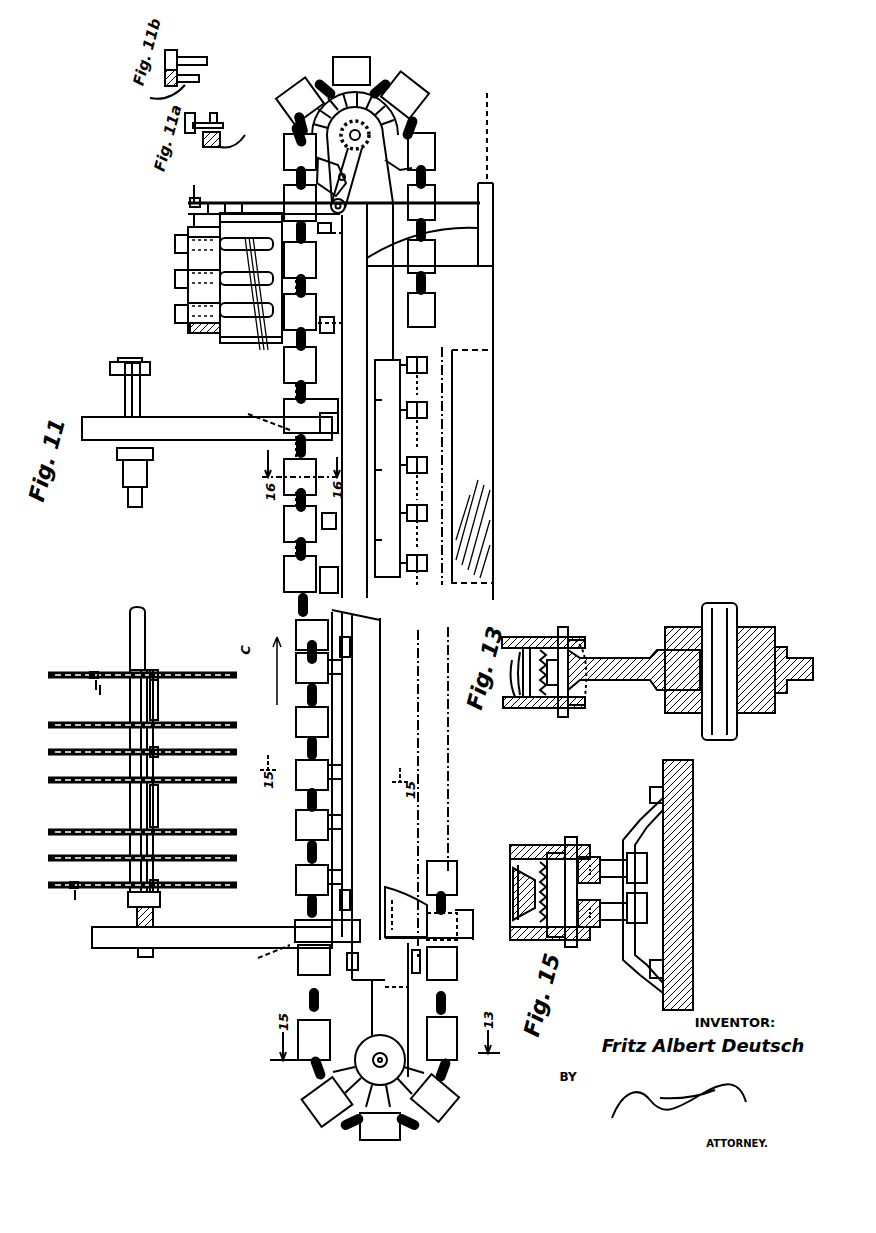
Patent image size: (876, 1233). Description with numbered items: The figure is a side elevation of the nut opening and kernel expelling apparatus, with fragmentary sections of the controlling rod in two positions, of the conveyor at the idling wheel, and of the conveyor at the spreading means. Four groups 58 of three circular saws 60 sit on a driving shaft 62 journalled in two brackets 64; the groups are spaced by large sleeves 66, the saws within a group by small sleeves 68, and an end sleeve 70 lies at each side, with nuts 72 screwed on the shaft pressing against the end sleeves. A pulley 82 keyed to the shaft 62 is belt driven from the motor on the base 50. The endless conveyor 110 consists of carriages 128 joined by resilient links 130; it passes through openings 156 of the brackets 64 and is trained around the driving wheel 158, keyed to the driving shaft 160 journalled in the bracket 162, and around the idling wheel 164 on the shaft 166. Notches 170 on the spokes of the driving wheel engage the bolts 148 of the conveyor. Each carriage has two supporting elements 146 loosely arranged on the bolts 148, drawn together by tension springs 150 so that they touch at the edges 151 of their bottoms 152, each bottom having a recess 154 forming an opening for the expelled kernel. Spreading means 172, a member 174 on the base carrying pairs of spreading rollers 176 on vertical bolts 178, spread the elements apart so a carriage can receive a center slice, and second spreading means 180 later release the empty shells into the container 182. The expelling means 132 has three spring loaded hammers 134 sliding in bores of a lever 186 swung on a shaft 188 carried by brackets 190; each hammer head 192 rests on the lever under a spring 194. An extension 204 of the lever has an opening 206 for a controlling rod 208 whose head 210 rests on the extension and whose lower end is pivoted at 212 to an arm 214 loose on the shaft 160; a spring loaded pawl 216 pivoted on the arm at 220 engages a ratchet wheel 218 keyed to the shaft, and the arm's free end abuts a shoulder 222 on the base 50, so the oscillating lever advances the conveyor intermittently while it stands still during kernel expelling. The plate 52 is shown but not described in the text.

In FIG. 11, the base 50 is at (378, 345).
In FIG. 15, the base 50 is at (665, 812).
In FIG. 11, the frame plate 52 is at (480, 235).
In FIG. 11, the group of circular saws 58 is at (48, 675).
In FIG. 11, the circular saw 60 is at (120, 760).
In FIG. 11, the driving shaft 62 is at (140, 395).
In FIG. 11, the bracket 64 is at (200, 417).
In FIG. 11, the large sleeve 66 is at (158, 700).
In FIG. 11, the small sleeve 68 is at (158, 672).
In FIG. 11, the end sleeve 70 is at (147, 470).
In FIG. 11, the nut 72 is at (117, 455).
In FIG. 11, the pulley 82 is at (110, 368).
In FIG. 11, the conveyor 110 is at (284, 580).
In FIG. 11, the carriage 128 is at (284, 520).
In FIG. 13, the carriage 128 is at (542, 650).
In FIG. 15, the carriage 128 is at (542, 860).
In FIG. 11, the link 130 is at (296, 118).
In FIG. 13, the link 130 is at (575, 640).
In FIG. 15, the link 130 is at (556, 853).
In FIG. 11, the expelling means 132 is at (175, 262).
In FIG. 11, the hammer 134 is at (258, 309).
In FIG. 13, the supporting element 146 is at (512, 637).
In FIG. 15, the supporting element 146 is at (516, 845).
In FIG. 13, the bolt 148 is at (588, 645).
In FIG. 15, the bolt 148 is at (577, 947).
In FIG. 13, the tension spring 150 is at (563, 627).
In FIG. 15, the tension spring 150 is at (568, 947).
In FIG. 13, the edge 151 is at (550, 700).
In FIG. 13, the bottom 152 is at (512, 697).
In FIG. 15, the bottom 152 is at (512, 860).
In FIG. 13, the recess 154 is at (526, 648).
In FIG. 15, the recess 154 is at (512, 892).
In FIG. 11, the opening 156 is at (262, 408).
In FIG. 13, the opening 156 is at (522, 697).
In FIG. 11, the driving wheel 158 is at (345, 70).
In FIG. 11, the driving shaft 160 is at (315, 75).
In FIG. 11, the bracket 162 is at (420, 97).
In FIG. 11, the idling wheel 164 is at (447, 1104).
In FIG. 13, the idling wheel 164 is at (628, 658).
In FIG. 11, the shaft 166 is at (382, 1052).
In FIG. 13, the shaft 166 is at (705, 612).
In FIG. 11, the notch 170 is at (476, 160).
In FIG. 11, the spreading means 172 is at (345, 835).
In FIG. 15, the spreading means 172 is at (632, 853).
In FIG. 11, the member 174 is at (345, 705).
In FIG. 15, the member 174 is at (638, 828).
In FIG. 11, the spreading roller 176 is at (348, 880).
In FIG. 15, the spreading roller 176 is at (590, 857).
In FIG. 15, the vertical bolt 178 is at (594, 855).
In FIG. 11, the second spreading means 180 is at (385, 430).
In FIG. 11, the container 182 is at (495, 530).
In FIG. 11B, the lever 186 is at (150, 98).
In FIG. 11A, the lever 186 is at (234, 129).
In FIG. 11, the lever 186 is at (215, 343).
In FIG. 11, the shaft 188 is at (190, 333).
In FIG. 11, the bracket 190 is at (188, 240).
In FIG. 11, the head 192 is at (188, 235).
In FIG. 11, the spring 194 is at (188, 232).
In FIG. 11B, the extension 204 is at (190, 57).
In FIG. 11A, the extension 204 is at (215, 123).
In FIG. 11, the extension 204 is at (215, 191).
In FIG. 11, the opening 206 is at (228, 191).
In FIG. 11B, the controlling rod 208 is at (198, 75).
In FIG. 11A, the controlling rod 208 is at (218, 132).
In FIG. 11, the controlling rod 208 is at (243, 191).
In FIG. 11B, the head 210 is at (170, 50).
In FIG. 11A, the head 210 is at (190, 133).
In FIG. 11, the head 210 is at (326, 202).
In FIG. 11, the pivot 212 is at (355, 180).
In FIG. 11, the arm 214 is at (395, 182).
In FIG. 11, the pawl 216 is at (317, 165).
In FIG. 11, the ratchet wheel 218 is at (360, 105).
In FIG. 11, the pivot 220 is at (338, 235).
In FIG. 11, the shoulder 222 is at (350, 225).